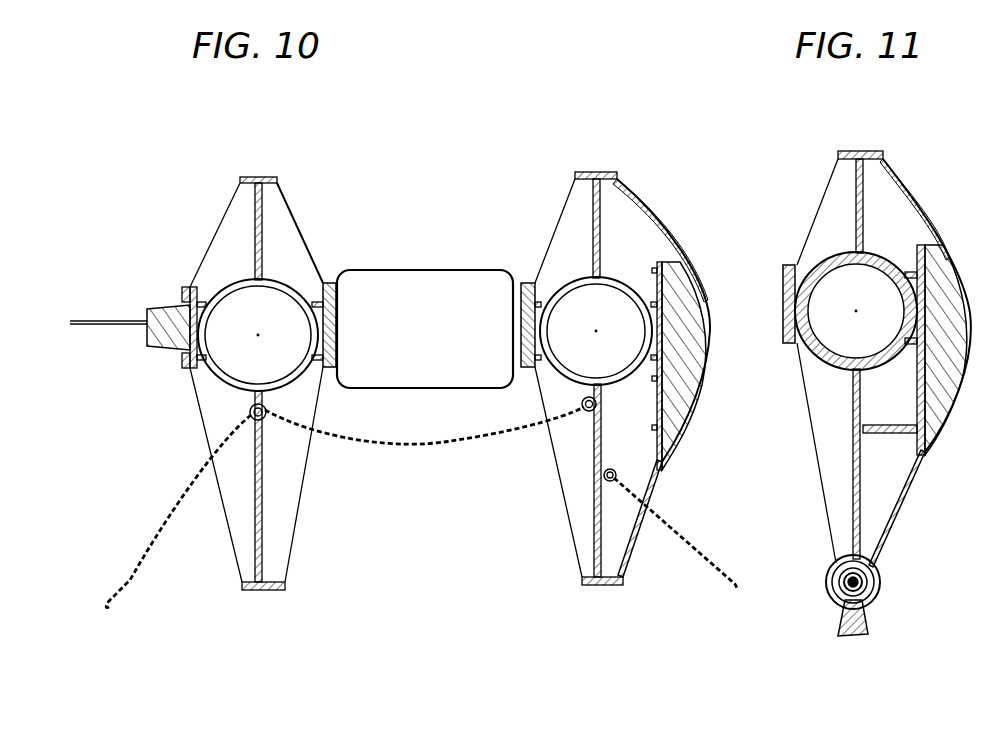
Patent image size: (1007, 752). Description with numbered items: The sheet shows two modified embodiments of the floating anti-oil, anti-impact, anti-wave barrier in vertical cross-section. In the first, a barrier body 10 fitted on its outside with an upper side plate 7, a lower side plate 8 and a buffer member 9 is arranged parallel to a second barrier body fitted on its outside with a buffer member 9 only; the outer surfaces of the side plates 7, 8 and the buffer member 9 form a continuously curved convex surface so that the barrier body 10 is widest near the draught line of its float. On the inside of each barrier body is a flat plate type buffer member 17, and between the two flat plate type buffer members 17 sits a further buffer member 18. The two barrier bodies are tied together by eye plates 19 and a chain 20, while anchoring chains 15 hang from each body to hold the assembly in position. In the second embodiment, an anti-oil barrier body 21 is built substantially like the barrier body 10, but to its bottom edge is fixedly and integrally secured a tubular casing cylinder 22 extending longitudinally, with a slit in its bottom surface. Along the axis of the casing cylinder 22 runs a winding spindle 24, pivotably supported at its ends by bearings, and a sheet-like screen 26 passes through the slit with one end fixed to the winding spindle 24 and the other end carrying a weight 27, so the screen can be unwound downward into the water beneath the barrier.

In FIG. 10, the upper side plate 7 is at (636, 196).
In FIG. 10, the lower side plate 8 is at (662, 497).
In FIG. 10, the buffer member 9 is at (188, 288).
In FIG. 10, the barrier body 10 is at (281, 154).
In FIG. 10, the anchoring chain 15 is at (178, 526).
In FIG. 10, the flat plate type buffer member 17 is at (327, 283).
In FIG. 10, the buffer member 18 is at (428, 270).
In FIG. 10, the eye plate 19 is at (266, 420).
In FIG. 10, the chain 20 is at (451, 442).
In FIG. 11, the anti-oil barrier body 21 is at (887, 155).
In FIG. 11, the tubular casing cylinder 22 is at (880, 576).
In FIG. 11, the winding spindle 24 is at (840, 578).
In FIG. 11, the sheet-like screen 26 is at (850, 590).
In FIG. 11, the weight 27 is at (870, 622).